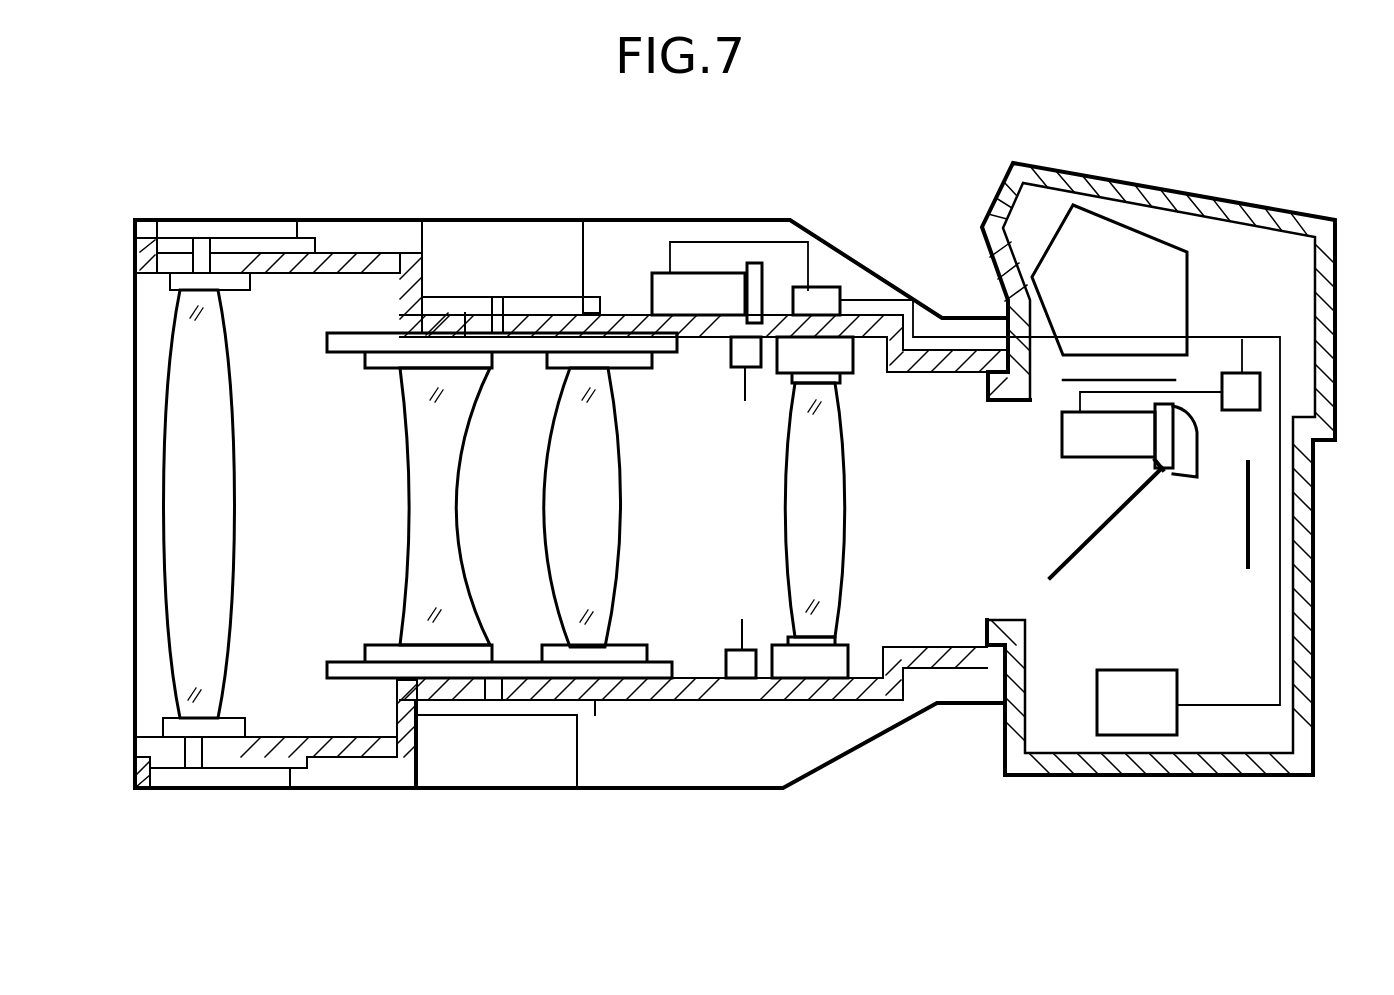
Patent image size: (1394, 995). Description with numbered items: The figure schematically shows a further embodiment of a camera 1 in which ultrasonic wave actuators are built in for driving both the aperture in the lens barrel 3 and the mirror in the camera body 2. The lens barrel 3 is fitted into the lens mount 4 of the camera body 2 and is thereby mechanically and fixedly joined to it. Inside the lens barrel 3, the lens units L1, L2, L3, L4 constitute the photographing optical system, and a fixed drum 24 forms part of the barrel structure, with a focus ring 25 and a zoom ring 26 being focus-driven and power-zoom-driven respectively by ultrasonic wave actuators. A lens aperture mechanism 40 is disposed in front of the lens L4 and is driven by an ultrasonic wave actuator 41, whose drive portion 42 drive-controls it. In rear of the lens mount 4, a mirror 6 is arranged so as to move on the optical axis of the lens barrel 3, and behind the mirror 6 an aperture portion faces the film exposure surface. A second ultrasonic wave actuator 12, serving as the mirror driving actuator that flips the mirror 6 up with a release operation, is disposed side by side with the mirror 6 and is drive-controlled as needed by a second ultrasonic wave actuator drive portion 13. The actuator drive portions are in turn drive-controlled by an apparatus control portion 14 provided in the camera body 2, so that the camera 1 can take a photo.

The camera 1 is at (1154, 160).
The camera body 2 is at (1314, 567).
The lens barrel 3 is at (665, 791).
The lens mount 4 is at (1011, 660).
The mirror 6 is at (1078, 548).
The second ultrasonic wave actuator 12 is at (1060, 435).
The second ultrasonic wave actuator drive portion 13 is at (1262, 391).
The apparatus control portion 14 is at (1133, 737).
The fixed drum 24 is at (372, 760).
The focus ring 25 is at (233, 248).
The zoom ring 26 is at (468, 305).
The lens aperture mechanism 40 is at (733, 355).
The ultrasonic wave actuator 41 is at (700, 283).
The drive portion 42 is at (823, 300).
The lens unit L1 is at (235, 520).
The lens unit L2 is at (410, 540).
The lens unit L3 is at (610, 545).
The lens unit L4 is at (838, 548).